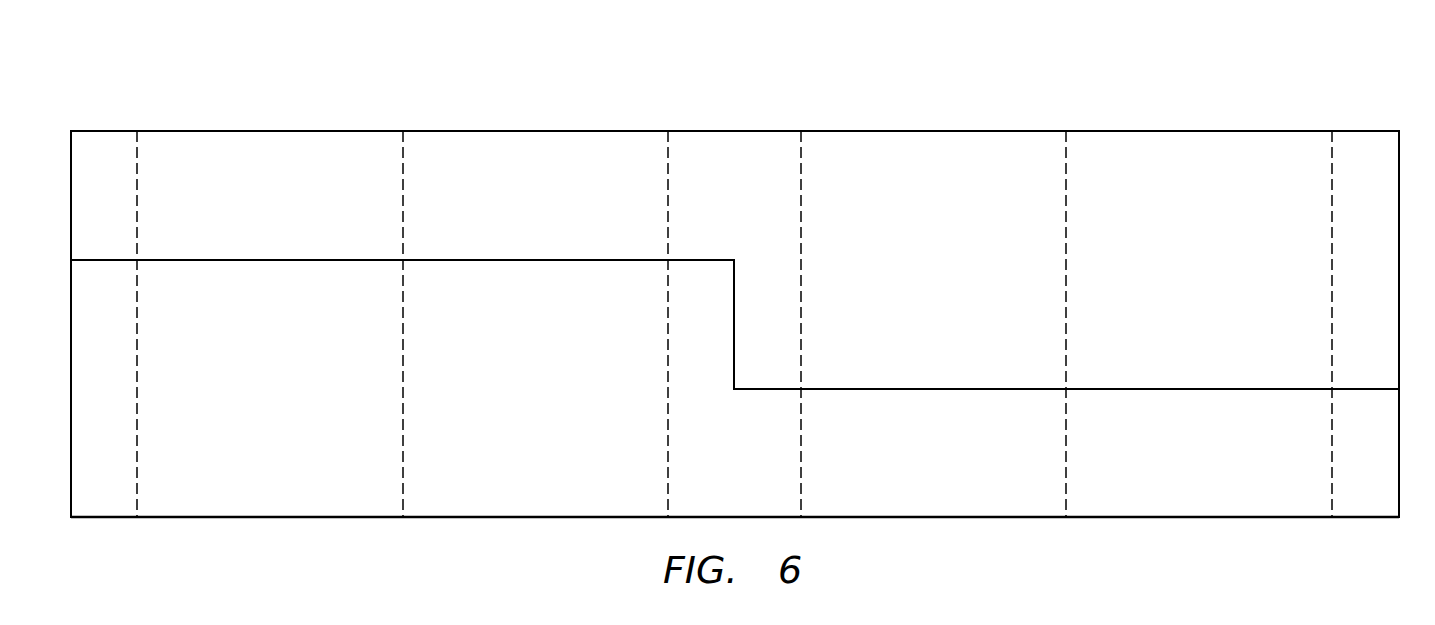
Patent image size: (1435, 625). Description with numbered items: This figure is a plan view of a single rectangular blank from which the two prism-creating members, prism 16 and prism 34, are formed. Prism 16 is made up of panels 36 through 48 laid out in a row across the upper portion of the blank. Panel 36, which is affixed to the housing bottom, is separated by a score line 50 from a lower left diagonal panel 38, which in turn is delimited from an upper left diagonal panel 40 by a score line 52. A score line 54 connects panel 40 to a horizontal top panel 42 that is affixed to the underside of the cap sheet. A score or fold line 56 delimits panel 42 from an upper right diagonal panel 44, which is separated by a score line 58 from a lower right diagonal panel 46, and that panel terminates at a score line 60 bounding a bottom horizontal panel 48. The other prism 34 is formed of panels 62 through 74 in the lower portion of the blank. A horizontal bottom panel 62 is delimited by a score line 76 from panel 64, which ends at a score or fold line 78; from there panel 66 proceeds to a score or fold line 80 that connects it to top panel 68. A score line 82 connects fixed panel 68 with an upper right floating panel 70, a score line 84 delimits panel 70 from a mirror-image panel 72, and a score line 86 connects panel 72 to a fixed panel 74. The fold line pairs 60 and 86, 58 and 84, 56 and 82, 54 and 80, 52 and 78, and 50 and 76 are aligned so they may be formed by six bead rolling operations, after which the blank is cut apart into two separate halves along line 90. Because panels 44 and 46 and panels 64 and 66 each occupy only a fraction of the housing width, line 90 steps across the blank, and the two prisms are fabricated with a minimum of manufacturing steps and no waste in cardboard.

The prism 16 is at (940, 101).
The transverse cell or prism 34 is at (940, 549).
The panel 36 is at (1381, 275).
The lower left diagonal panel 38 is at (1214, 273).
The upper left diagonal panel 40 is at (948, 273).
The horizontal top panel 42 is at (750, 208).
The upper right diagonal panel 44 is at (550, 208).
The lower right diagonal panel 46 is at (286, 208).
The bottom horizontal panel 48 is at (118, 208).
The score line 50 is at (1330, 173).
The score line 52 is at (1064, 173).
The score line 54 is at (802, 173).
The score or fold line 56 is at (666, 173).
The score line 58 is at (404, 173).
The score line 60 is at (138, 173).
The horizontal bottom panel 62 is at (1382, 467).
The panel 64 is at (1214, 467).
The panel 66 is at (948, 467).
The top panel 68 is at (750, 467).
The upper right floating panel 70 is at (550, 401).
The mirror-image panel 72 is at (285, 401).
The fixed panel 74 is at (118, 401).
The score line 76 is at (1330, 476).
The score or fold line 78 is at (1064, 476).
The score or fold line 80 is at (802, 476).
The score line 82 is at (666, 476).
The score line 84 is at (404, 476).
The score line 86 is at (138, 476).
The line 90 is at (555, 262).